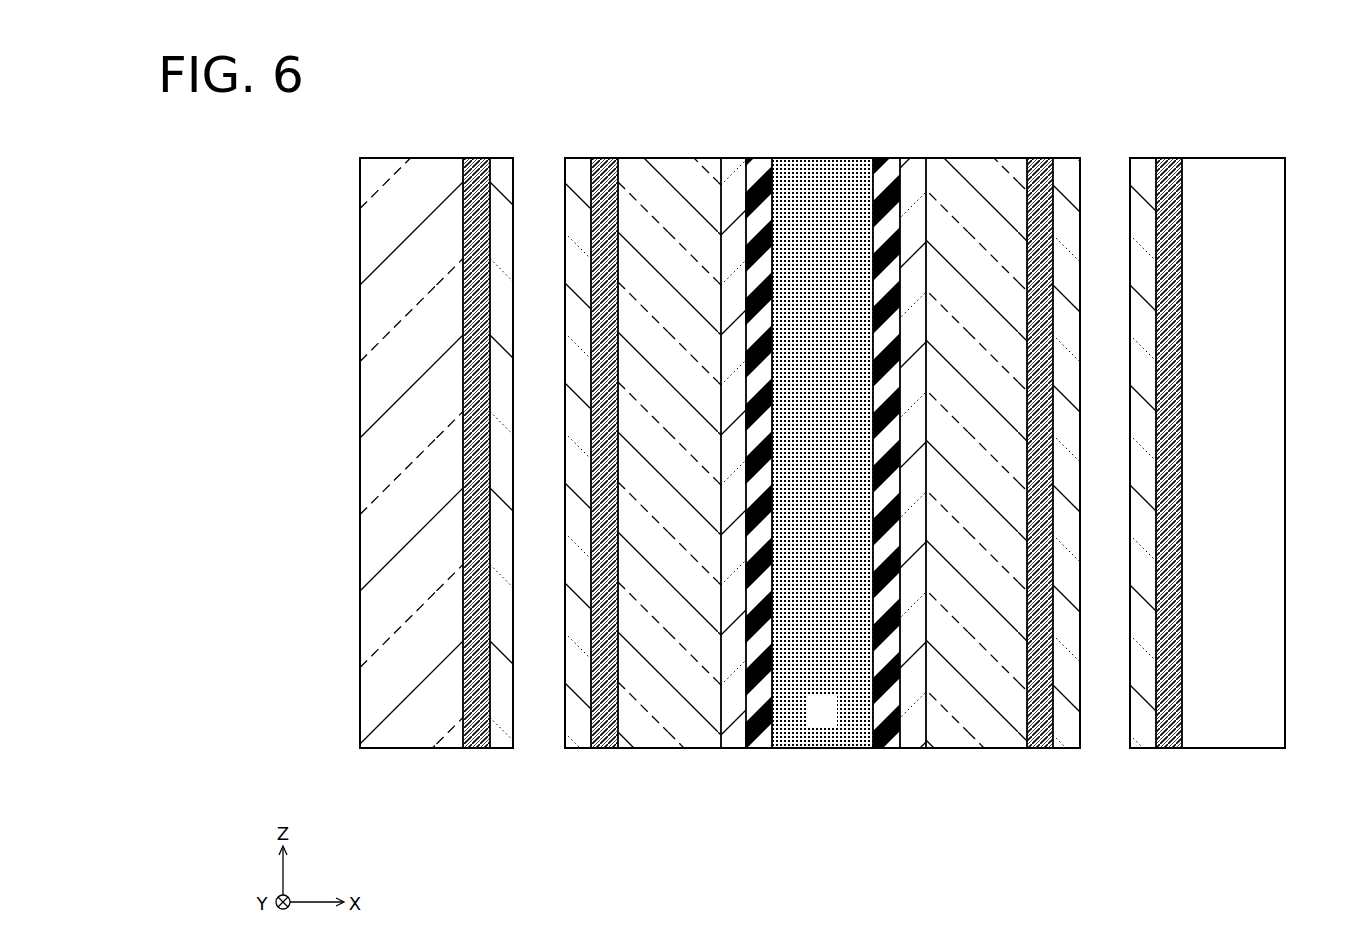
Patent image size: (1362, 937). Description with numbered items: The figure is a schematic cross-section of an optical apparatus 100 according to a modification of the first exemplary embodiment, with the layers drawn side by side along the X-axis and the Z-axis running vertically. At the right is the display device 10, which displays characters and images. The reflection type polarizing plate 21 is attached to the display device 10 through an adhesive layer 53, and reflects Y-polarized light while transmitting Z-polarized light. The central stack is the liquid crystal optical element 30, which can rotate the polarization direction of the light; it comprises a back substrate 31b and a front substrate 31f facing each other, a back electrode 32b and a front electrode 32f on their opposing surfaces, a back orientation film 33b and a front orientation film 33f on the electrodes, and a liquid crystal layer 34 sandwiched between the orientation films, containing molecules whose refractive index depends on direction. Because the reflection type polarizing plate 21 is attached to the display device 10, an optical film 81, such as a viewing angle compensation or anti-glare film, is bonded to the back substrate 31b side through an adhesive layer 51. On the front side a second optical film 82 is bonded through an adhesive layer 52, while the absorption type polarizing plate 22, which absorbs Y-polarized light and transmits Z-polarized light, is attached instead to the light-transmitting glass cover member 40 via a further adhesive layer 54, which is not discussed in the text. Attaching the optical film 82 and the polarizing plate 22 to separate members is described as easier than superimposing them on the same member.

The optical apparatus 100 is at (1260, 79).
The display device 10 is at (1187, 420).
The reflection type polarizing plate 21 is at (1114, 431).
The adhesive layer 53 is at (1134, 420).
The liquid crystal optical element 30 is at (1030, 140).
The front substrate 31f is at (669, 471).
The front electrode 32f is at (695, 483).
The front orientation film 33f is at (714, 496).
The liquid crystal layer 34 is at (833, 723).
The back orientation film 33b is at (934, 496).
The back electrode 32b is at (953, 483).
The back substrate 31b is at (980, 471).
The optical film 81 is at (1082, 471).
The adhesive layer 51 is at (1082, 483).
The optical film 82 is at (549, 431).
The adhesive layer 52 is at (571, 420).
The cover member 40 is at (402, 431).
The fourth adhesive layer 54 is at (447, 471).
The absorption type polarizing plate 22 is at (465, 483).